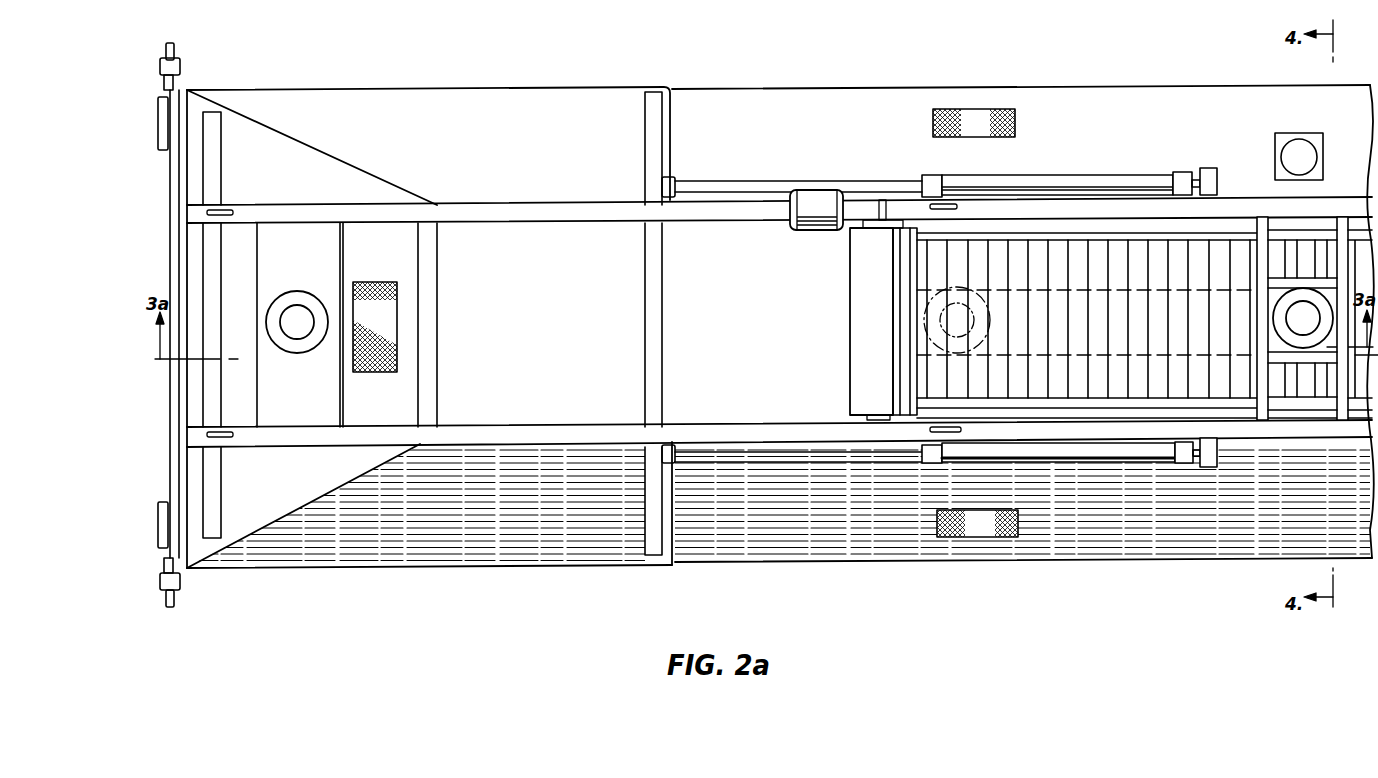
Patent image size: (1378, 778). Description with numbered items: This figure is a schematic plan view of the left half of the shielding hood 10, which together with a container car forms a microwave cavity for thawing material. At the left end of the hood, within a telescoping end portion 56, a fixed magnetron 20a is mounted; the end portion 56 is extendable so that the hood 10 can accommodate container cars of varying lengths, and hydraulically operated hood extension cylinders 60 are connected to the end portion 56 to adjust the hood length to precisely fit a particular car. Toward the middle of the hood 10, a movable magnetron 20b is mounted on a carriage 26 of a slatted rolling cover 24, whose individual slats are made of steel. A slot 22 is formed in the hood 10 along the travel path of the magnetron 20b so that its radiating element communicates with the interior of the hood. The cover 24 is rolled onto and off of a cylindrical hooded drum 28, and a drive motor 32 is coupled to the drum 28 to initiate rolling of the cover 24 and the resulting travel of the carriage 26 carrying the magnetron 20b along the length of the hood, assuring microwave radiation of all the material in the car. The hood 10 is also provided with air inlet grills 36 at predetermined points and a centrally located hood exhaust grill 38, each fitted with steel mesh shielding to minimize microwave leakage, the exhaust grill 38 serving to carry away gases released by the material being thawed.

The shielding hood 10 is at (552, 316).
The magnetron 20a is at (293, 306).
The movable magnetron 20b is at (1303, 310).
The slot 22 is at (1035, 355).
The slatted rolling cover 24 is at (1198, 250).
The carriage 26 is at (1287, 275).
The hooded drum 28 is at (850, 281).
The drive motor 32 is at (805, 196).
The air inlet grill 36 is at (374, 285).
The hood exhaust grill 38 is at (1001, 107).
The telescoping end portion 56 is at (537, 93).
The hood extension cylinder 60 is at (1117, 181).